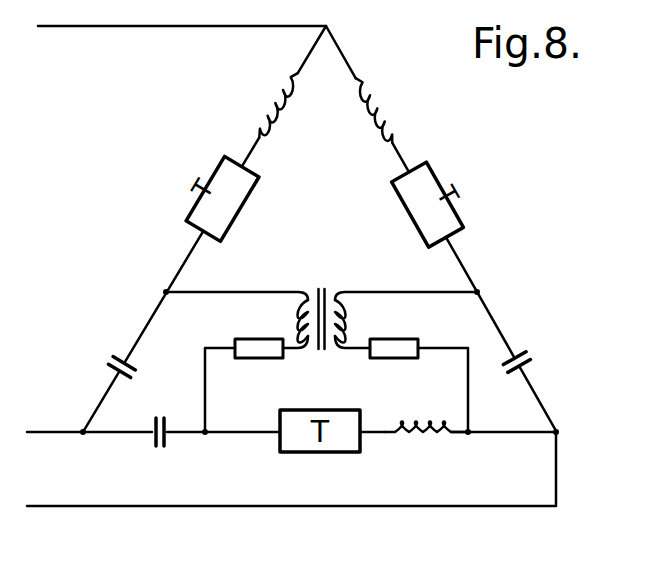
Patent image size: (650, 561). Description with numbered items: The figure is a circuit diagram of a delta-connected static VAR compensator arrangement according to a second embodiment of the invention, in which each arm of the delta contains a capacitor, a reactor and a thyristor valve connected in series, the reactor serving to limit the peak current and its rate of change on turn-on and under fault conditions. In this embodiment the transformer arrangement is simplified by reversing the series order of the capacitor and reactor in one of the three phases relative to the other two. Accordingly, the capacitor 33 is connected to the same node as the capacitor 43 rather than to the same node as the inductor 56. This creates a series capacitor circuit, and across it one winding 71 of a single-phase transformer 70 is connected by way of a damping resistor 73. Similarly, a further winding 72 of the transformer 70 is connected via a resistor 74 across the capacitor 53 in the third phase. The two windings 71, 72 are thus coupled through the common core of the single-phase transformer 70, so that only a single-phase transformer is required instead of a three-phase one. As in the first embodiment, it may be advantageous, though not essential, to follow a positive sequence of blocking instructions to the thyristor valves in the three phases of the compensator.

The capacitor 33 is at (110, 370).
The capacitor 43 is at (167, 437).
The capacitor 53 is at (528, 367).
The inductor 56 is at (397, 117).
The single-phase transformer 70 is at (329, 281).
The winding 71 is at (292, 308).
The further winding 72 is at (345, 320).
The damping resistor 73 is at (253, 358).
The resistor 74 is at (402, 350).